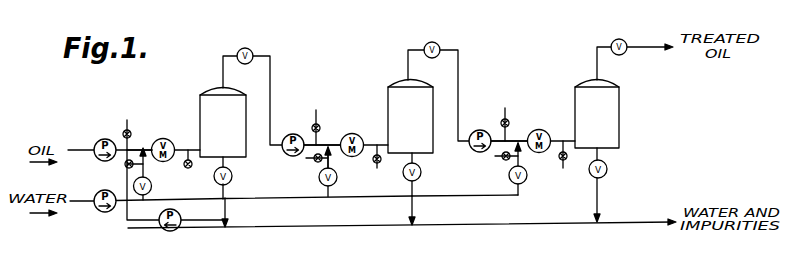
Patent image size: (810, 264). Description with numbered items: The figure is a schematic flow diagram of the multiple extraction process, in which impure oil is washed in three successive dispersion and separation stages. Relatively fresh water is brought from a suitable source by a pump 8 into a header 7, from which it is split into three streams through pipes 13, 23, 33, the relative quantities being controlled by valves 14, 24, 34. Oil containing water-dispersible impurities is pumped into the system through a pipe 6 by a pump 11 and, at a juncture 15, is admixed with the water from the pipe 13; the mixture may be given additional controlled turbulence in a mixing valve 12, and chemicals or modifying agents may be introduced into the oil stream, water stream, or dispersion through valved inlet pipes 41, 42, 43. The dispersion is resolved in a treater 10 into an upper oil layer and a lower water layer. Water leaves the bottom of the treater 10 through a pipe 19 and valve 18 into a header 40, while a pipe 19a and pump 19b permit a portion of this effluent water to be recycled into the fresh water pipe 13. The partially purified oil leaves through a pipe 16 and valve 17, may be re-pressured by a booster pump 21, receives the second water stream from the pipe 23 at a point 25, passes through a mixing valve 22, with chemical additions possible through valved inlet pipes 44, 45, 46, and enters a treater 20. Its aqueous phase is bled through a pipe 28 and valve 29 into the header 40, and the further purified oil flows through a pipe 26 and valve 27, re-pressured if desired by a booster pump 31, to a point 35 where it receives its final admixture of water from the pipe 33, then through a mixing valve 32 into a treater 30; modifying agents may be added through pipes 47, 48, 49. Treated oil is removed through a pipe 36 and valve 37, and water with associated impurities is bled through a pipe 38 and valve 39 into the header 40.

The pipe 6 is at (80, 148).
The header 7 is at (193, 203).
The pump 8 is at (105, 212).
The treater 10 is at (223, 123).
The pump 11 is at (105, 139).
The mixing valve 12 is at (166, 138).
The pipe 13 is at (147, 195).
The valve 14 is at (149, 182).
The point 15 is at (143, 148).
The pipe 16 is at (224, 55).
The valve 17 is at (251, 49).
The valve 18 is at (232, 179).
The pipe 19 is at (228, 211).
The pipe 19a is at (200, 222).
The pump 19b is at (171, 231).
The treater 20 is at (410, 117).
The booster pump 21 is at (293, 133).
The mixing valve 22 is at (355, 133).
The pipe 23 is at (336, 183).
The valve 24 is at (335, 170).
The point 25 is at (328, 140).
The pipe 26 is at (408, 49).
The valve 27 is at (436, 43).
The pipe 28 is at (415, 212).
The valve 29 is at (420, 177).
The treater 30 is at (597, 114).
The booster pump 31 is at (481, 130).
The mixing valve 32 is at (543, 131).
The pipe 33 is at (508, 197).
The valve 34 is at (525, 178).
The point 35 is at (518, 135).
The pipe 36 is at (597, 45).
The valve 37 is at (621, 40).
The pipe 38 is at (600, 198).
The valve 39 is at (608, 167).
The header 40 is at (343, 227).
The valved inlet pipe 41 is at (127, 120).
The valved inlet pipe 42 is at (125, 165).
The valved inlet pipe 43 is at (188, 168).
The valved inlet pipe 44 is at (316, 110).
The valved inlet pipe 45 is at (306, 158).
The valved inlet pipe 46 is at (377, 168).
The pipe 47 is at (505, 108).
The pipe 48 is at (495, 157).
The pipe 49 is at (563, 168).